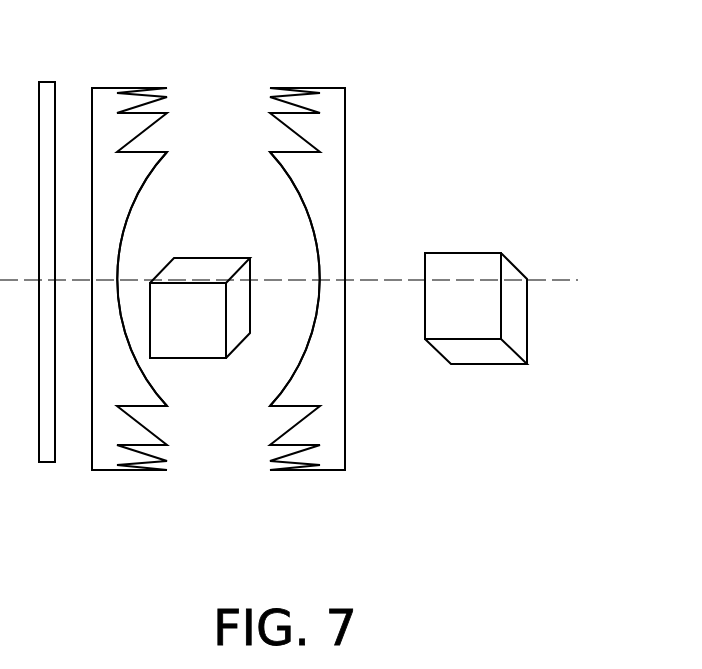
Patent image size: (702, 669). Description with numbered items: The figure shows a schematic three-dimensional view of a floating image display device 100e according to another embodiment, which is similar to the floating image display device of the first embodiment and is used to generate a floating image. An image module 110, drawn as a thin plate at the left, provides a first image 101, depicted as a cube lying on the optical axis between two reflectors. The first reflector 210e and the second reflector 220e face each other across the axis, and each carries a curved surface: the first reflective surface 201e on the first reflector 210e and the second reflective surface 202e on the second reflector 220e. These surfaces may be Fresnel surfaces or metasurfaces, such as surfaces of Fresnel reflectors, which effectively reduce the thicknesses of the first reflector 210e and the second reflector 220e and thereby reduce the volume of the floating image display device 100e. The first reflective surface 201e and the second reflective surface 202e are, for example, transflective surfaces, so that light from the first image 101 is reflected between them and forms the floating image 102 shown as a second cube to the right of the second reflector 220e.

The floating image display device 100e is at (572, 542).
The image module 110 is at (45, 457).
The first reflector 210e is at (107, 93).
The first reflective surface 201e is at (150, 181).
The second reflector 220e is at (333, 92).
The second reflective surface 202e is at (294, 189).
The first image 101 is at (197, 348).
The second object (cube image) 102 is at (478, 357).